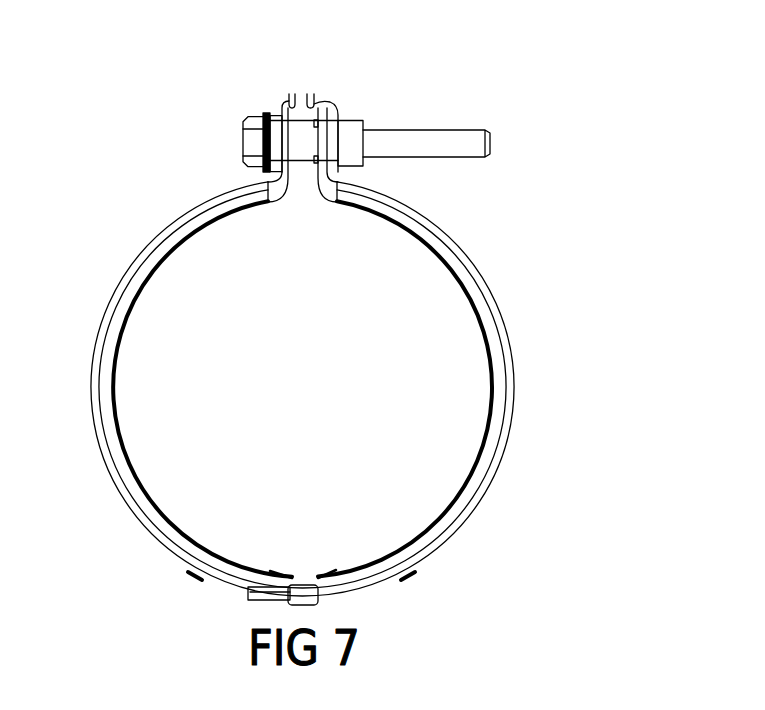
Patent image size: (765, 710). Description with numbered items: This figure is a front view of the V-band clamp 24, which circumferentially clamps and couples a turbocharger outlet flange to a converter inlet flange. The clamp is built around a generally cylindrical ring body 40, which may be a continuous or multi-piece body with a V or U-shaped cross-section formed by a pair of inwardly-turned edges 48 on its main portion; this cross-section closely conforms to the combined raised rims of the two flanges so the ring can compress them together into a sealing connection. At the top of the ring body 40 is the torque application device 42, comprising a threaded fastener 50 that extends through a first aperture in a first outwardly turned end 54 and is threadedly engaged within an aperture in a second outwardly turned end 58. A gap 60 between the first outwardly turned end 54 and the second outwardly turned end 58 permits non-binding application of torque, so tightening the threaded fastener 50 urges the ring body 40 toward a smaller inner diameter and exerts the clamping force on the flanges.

The V-band clamp 24 is at (576, 153).
The ring body 40 is at (463, 246).
The torque application device 42 is at (206, 126).
The inwardly-turned edges 48 is at (145, 492).
The threaded fastener 50 is at (243, 152).
The first outwardly turned end 54 is at (289, 95).
The second outwardly turned end 58 is at (333, 104).
The gap 60 is at (305, 177).